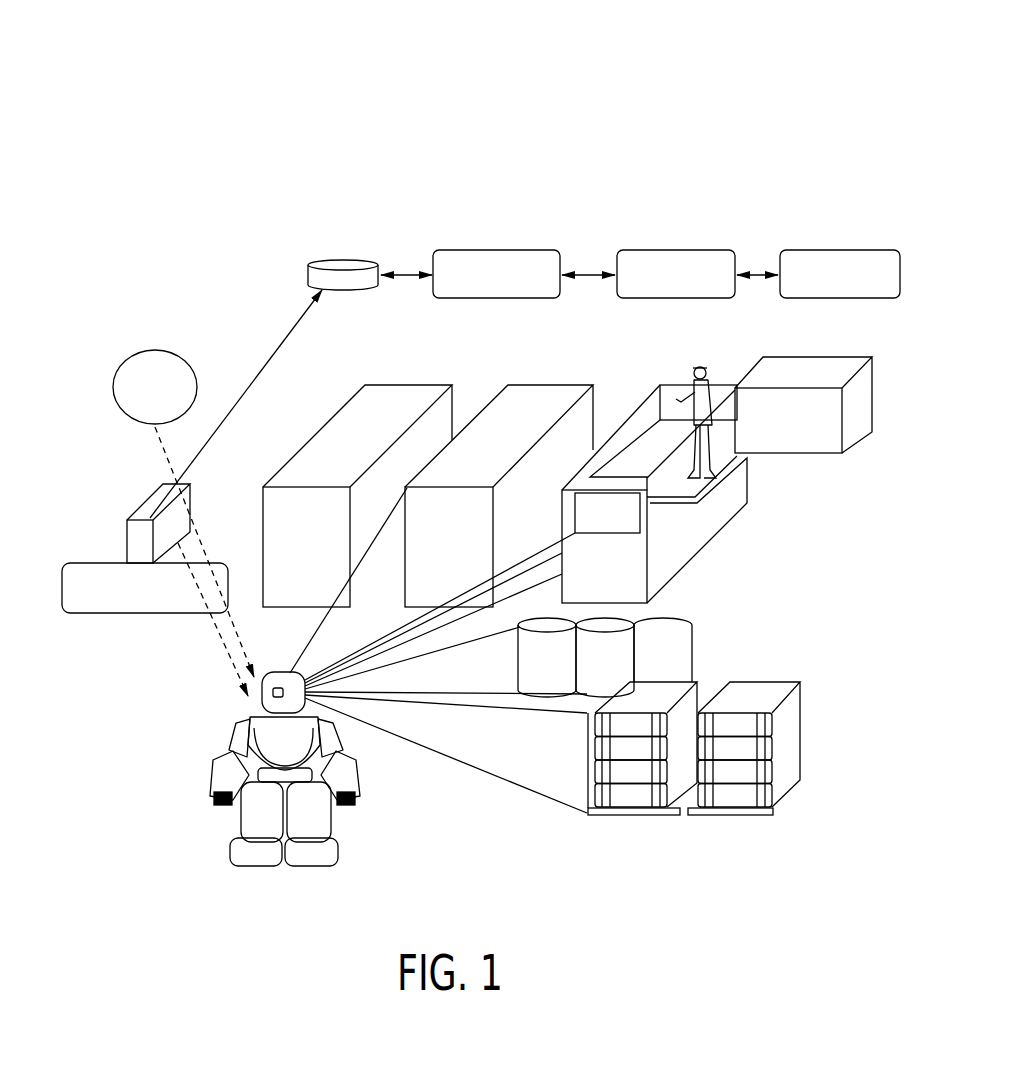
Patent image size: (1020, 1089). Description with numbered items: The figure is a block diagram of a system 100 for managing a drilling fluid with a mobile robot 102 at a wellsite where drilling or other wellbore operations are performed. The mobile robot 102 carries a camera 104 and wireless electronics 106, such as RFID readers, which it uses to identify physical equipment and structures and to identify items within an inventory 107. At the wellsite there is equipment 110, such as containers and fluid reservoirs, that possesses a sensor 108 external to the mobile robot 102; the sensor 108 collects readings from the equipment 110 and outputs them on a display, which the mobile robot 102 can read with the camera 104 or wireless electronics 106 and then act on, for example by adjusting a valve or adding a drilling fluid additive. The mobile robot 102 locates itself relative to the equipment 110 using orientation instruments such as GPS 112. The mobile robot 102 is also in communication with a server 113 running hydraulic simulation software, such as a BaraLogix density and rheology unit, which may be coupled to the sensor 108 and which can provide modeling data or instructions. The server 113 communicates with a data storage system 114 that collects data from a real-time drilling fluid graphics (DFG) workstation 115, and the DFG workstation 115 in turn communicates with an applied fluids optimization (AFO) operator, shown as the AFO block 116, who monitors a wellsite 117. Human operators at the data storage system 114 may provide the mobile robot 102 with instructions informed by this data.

The system 100 is at (832, 96).
The mobile robot 102 is at (237, 757).
The camera 104 is at (411, 680).
The wireless electronics 106 is at (440, 745).
The inventory 107 is at (725, 818).
The sensor 108 is at (660, 398).
The equipment 110 is at (517, 398).
The GPS 112 is at (113, 388).
The server 113 is at (140, 510).
The data storage system 114 is at (342, 262).
The real-time drilling fluid graphics (DFG) workstation 115 is at (500, 250).
The AFO module 116 is at (675, 250).
The wellsite 117 is at (838, 250).